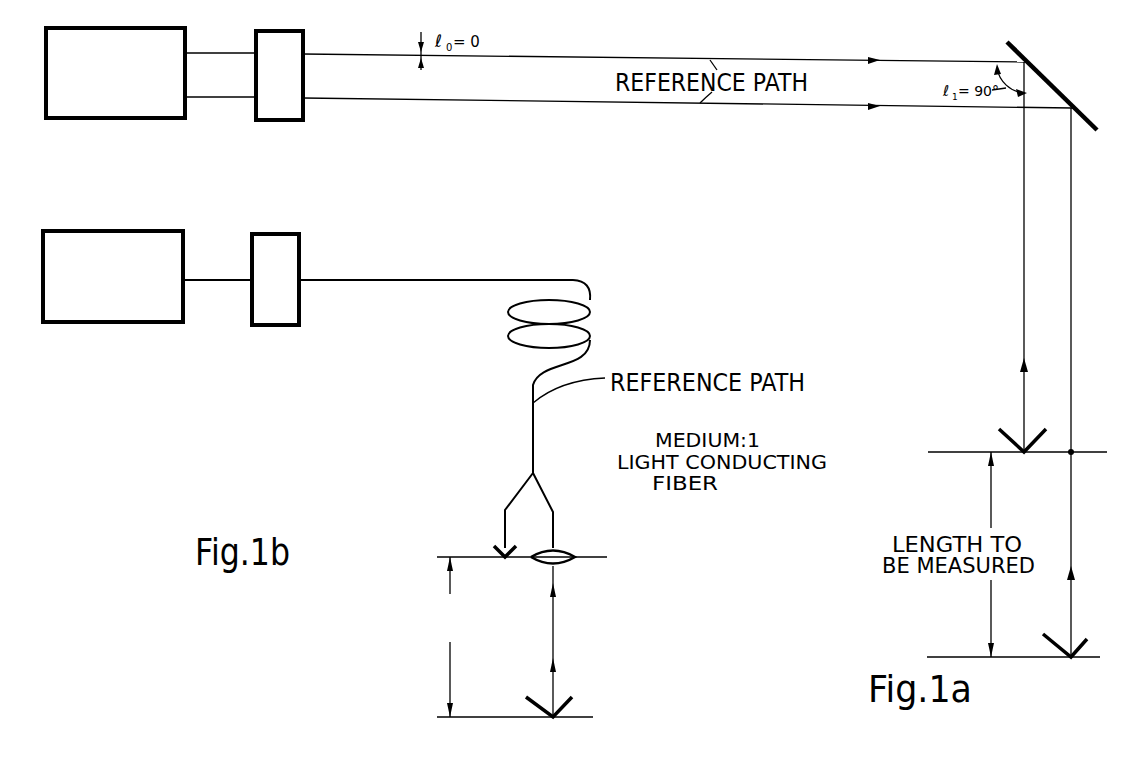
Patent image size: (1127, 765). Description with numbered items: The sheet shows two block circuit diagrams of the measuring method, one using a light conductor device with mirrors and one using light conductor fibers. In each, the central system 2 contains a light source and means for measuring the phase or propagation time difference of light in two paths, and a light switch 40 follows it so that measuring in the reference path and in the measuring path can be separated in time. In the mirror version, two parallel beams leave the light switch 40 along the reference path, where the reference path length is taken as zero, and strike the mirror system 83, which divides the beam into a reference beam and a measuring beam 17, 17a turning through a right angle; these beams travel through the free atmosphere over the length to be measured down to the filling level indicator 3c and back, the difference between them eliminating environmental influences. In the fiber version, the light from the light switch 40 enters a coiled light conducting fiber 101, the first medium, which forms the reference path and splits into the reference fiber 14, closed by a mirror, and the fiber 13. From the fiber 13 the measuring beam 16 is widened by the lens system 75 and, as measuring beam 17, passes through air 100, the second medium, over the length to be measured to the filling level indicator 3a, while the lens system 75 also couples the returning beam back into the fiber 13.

In FIG. 1a, the central system 2 is at (148, 67).
In FIG. 1b, the central system 2 is at (146, 277).
In FIG. 1a, the light switch 40 is at (280, 67).
In FIG. 1b, the light switch 40 is at (277, 272).
In FIG. 1a, the mirror system 83 is at (1053, 80).
In FIG. 1a, the measuring beam 16 is at (828, 62).
In FIG. 1b, the measuring beam 16 is at (553, 605).
In FIG. 1a, the measuring beam 17a is at (1024, 316).
In FIG. 1a, the measuring beam 17 is at (1071, 540).
In FIG. 1b, the measuring beam 17 is at (553, 676).
In FIG. 1a, the filling level indicator 3c is at (1068, 660).
In FIG. 1b, the light conducting fiber 101 is at (533, 437).
In FIG. 1b, the reference fiber 14 is at (510, 500).
In FIG. 1b, the fiber 13 is at (552, 505).
In FIG. 1b, the lens system 75 is at (565, 552).
In FIG. 1b, the medium 2: air 100 is at (533, 658).
In FIG. 1b, the filling level indicator 3a is at (560, 712).